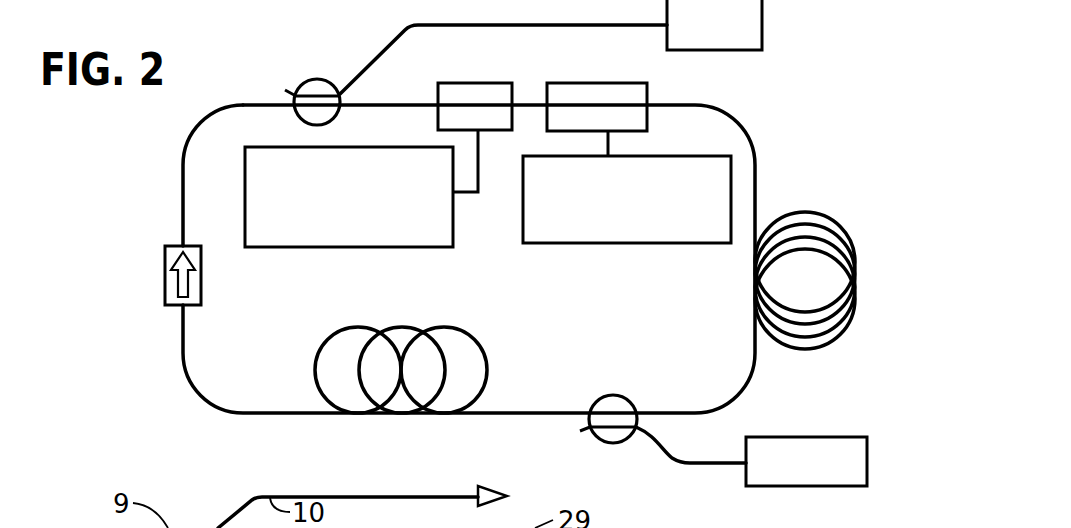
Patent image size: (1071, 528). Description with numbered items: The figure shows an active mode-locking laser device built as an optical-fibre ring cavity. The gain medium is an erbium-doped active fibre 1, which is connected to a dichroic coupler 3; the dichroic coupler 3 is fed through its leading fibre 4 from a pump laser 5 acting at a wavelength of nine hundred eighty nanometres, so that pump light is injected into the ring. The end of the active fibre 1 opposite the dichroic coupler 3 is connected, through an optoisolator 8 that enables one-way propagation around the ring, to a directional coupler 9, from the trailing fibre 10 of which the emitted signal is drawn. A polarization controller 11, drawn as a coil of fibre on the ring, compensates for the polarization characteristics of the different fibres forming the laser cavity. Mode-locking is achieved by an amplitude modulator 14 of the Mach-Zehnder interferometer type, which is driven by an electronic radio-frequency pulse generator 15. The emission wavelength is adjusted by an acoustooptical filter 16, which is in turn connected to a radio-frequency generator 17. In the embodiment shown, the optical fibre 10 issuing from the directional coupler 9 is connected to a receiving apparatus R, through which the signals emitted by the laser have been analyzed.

The active fibre 1 is at (470, 340).
The dichroic coupler 3 is at (615, 395).
The leading fibre 4 is at (720, 465).
The pump laser 5 is at (806, 487).
The optoisolator 8 is at (201, 283).
The directional coupler 9 is at (313, 79).
The trailing fibre 10 is at (433, 28).
The polarization controller 11 is at (843, 223).
The amplitude modulator 14 is at (497, 83).
The electronic radio-frequency pulse generator 15 is at (425, 248).
The acoustooptical filter 16 is at (648, 93).
The rf generator 17 is at (628, 244).
The receiving apparatus R is at (762, 26).